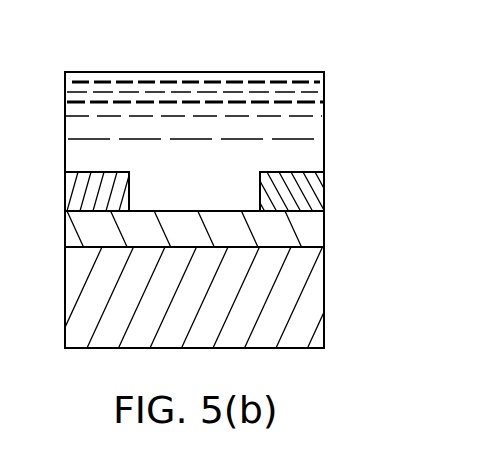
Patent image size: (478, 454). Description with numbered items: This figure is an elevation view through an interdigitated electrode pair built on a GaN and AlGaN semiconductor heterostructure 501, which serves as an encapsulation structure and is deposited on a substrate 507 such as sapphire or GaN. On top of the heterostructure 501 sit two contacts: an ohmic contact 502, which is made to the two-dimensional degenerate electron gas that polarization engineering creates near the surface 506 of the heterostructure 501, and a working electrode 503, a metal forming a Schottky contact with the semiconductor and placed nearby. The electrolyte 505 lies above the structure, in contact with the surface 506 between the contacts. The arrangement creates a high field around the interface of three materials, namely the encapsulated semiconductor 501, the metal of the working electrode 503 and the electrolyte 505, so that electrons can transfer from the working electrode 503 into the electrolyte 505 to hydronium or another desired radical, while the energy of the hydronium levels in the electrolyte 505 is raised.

The semiconductor heterostructure 501 is at (307, 246).
The ohmic contact 502 is at (80, 175).
The working electrode 503 is at (308, 170).
The electrolyte 505 is at (118, 73).
The surface 506 is at (228, 211).
The substrate 507 is at (80, 343).